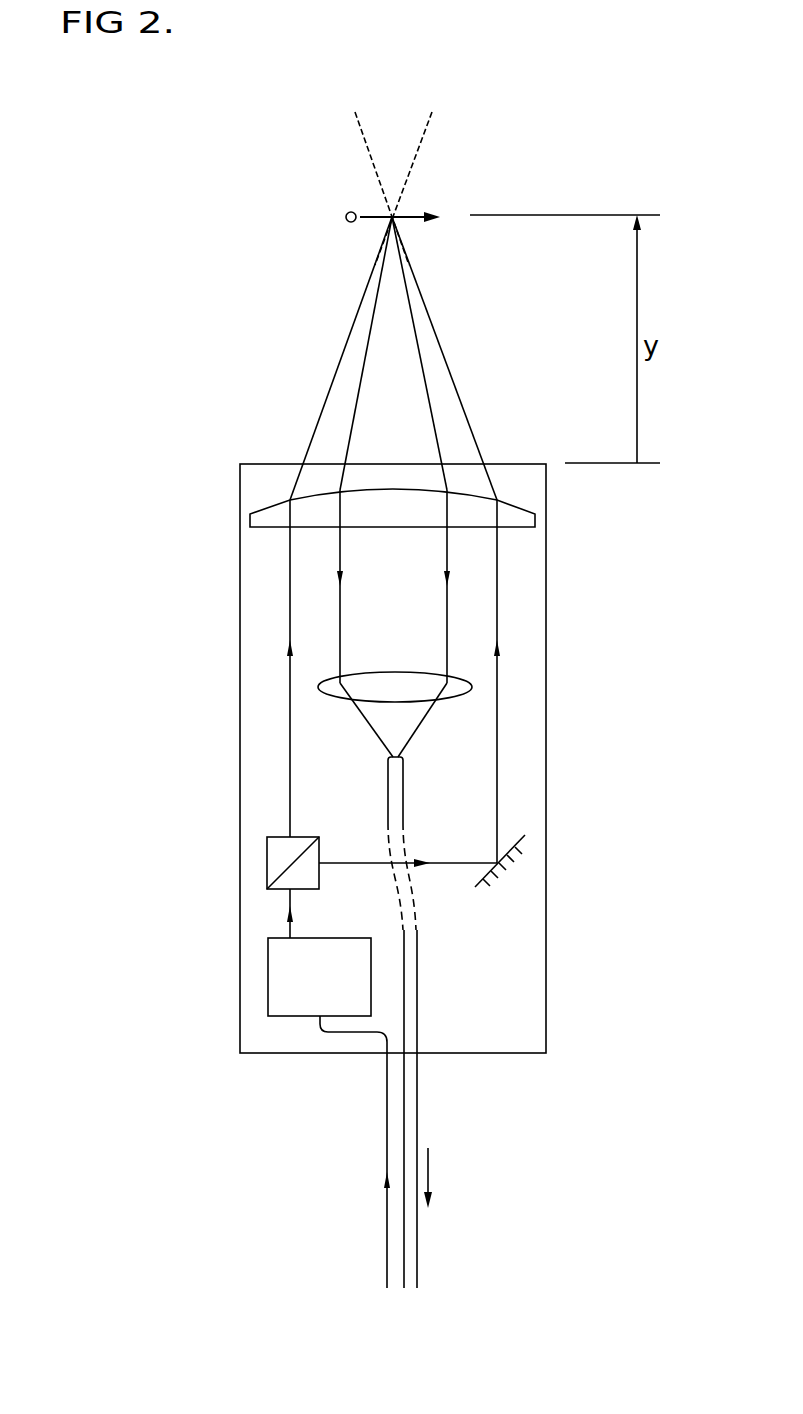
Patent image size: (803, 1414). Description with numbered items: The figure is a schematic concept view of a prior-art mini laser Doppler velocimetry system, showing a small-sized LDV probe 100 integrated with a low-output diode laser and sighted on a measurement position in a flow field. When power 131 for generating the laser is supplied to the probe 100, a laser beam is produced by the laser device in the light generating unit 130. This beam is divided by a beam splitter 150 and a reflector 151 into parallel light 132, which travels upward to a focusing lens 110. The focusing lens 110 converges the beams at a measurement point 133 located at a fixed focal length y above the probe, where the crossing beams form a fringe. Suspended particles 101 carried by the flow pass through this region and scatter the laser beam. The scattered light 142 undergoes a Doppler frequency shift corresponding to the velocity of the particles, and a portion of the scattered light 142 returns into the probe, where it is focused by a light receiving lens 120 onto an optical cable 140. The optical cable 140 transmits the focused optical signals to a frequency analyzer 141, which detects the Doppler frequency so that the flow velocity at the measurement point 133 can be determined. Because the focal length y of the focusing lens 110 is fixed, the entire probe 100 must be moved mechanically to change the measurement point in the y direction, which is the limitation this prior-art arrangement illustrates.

The LDV probe 100 is at (250, 521).
The suspended particles 101 is at (388, 199).
The focusing lens 110 is at (535, 515).
The light receiving lens 120 is at (472, 683).
The light generating unit 130 is at (268, 977).
The power 131 is at (387, 1238).
The parallel light 132 is at (291, 748).
The measurement point 133 is at (390, 216).
The optical cable 140 is at (404, 763).
The frequency analyzer 141 is at (441, 1109).
The scattered light 142 is at (340, 620).
The beam splitter 150 is at (267, 860).
The reflector 151 is at (505, 866).